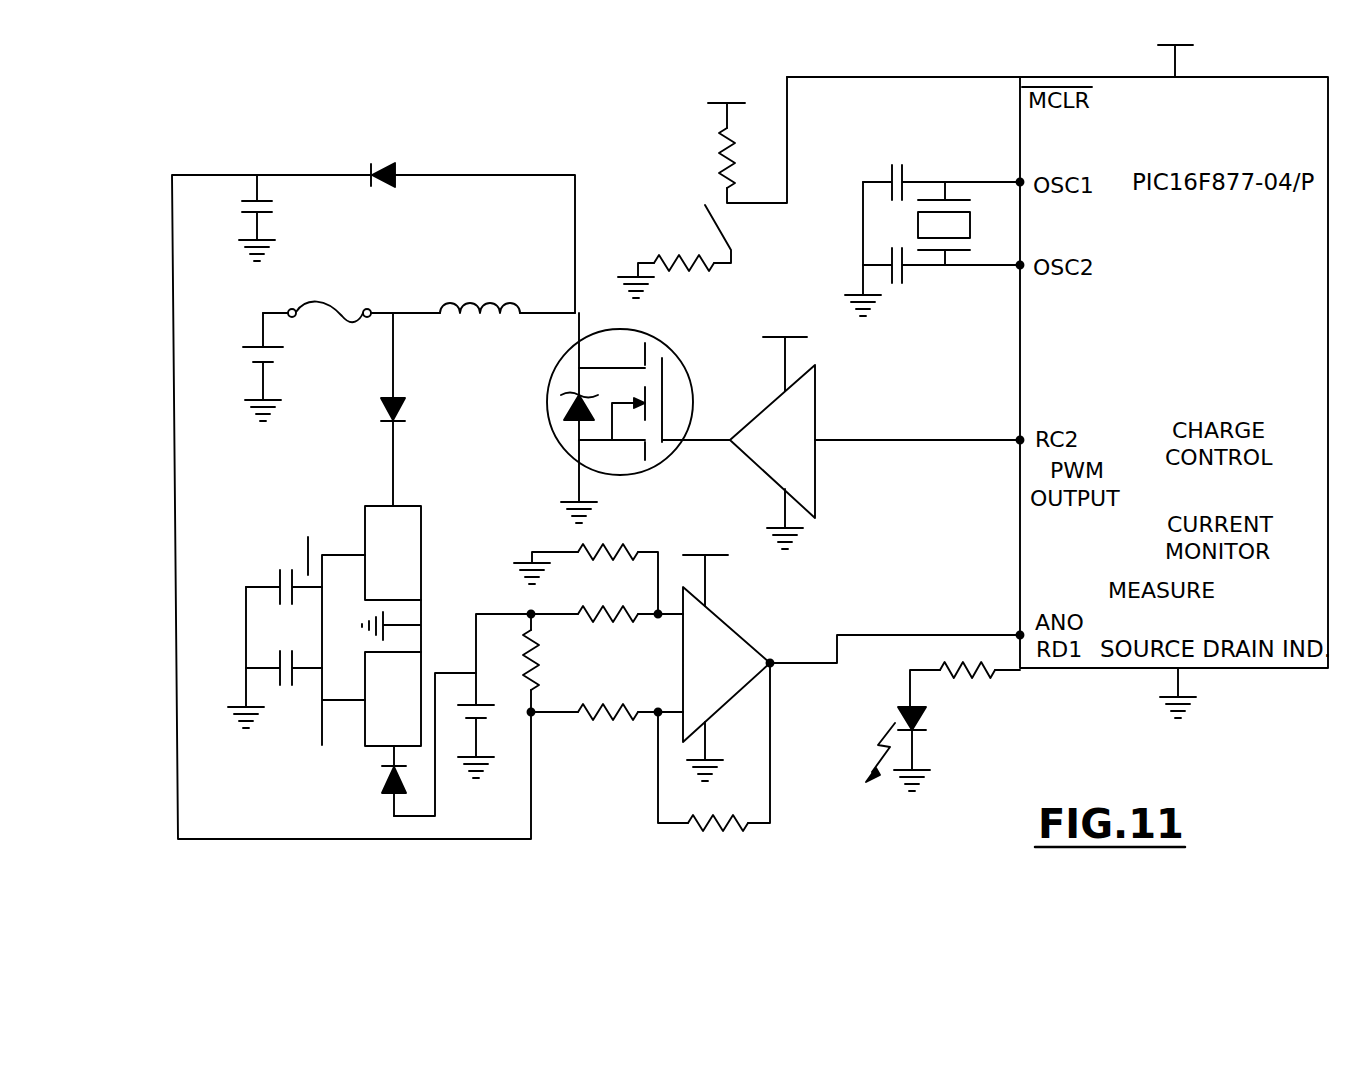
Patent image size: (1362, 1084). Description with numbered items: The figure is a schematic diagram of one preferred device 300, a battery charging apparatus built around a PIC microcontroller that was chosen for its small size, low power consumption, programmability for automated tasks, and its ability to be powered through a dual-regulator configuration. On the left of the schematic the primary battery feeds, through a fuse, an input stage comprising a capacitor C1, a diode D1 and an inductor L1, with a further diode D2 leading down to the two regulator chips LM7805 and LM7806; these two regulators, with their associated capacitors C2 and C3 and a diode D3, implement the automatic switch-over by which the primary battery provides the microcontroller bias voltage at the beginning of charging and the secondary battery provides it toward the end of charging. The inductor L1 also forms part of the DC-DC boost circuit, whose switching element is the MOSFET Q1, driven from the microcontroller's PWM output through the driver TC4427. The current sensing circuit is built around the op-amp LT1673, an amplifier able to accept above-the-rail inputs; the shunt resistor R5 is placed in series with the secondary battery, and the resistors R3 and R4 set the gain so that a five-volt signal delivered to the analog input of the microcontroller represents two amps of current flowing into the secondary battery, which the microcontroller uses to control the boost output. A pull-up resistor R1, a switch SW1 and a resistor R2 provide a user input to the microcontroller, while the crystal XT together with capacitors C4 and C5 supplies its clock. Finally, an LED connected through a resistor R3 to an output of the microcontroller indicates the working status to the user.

The device 300 is at (302, 154).
The diode D1 is at (381, 159).
The capacitor C1 is at (237, 218).
The inductor L1 is at (480, 295).
The diode D2 is at (414, 409).
The 5V voltage regulator LM7805 is at (385, 537).
The 6V voltage regulator LM7806 is at (380, 728).
The capacitor C2 is at (284, 569).
The capacitor C3 is at (284, 653).
The diode D3 is at (370, 781).
The resistor R5 is at (553, 663).
The resistor R4 is at (663, 693).
The resistor R3 is at (787, 681).
The operational amplifier LT1673 is at (705, 665).
The MOSFET transistor IRF620 Q1 is at (638, 409).
The MOSFET driver TC4427 is at (765, 448).
The resistor R1 is at (707, 158).
The switch SW1 is at (744, 234).
The resistor R2 is at (684, 280).
The capacitor C4 is at (941, 168).
The capacitor C5 is at (941, 252).
The crystal XT is at (960, 223).
The light emitting diode LED is at (926, 744).